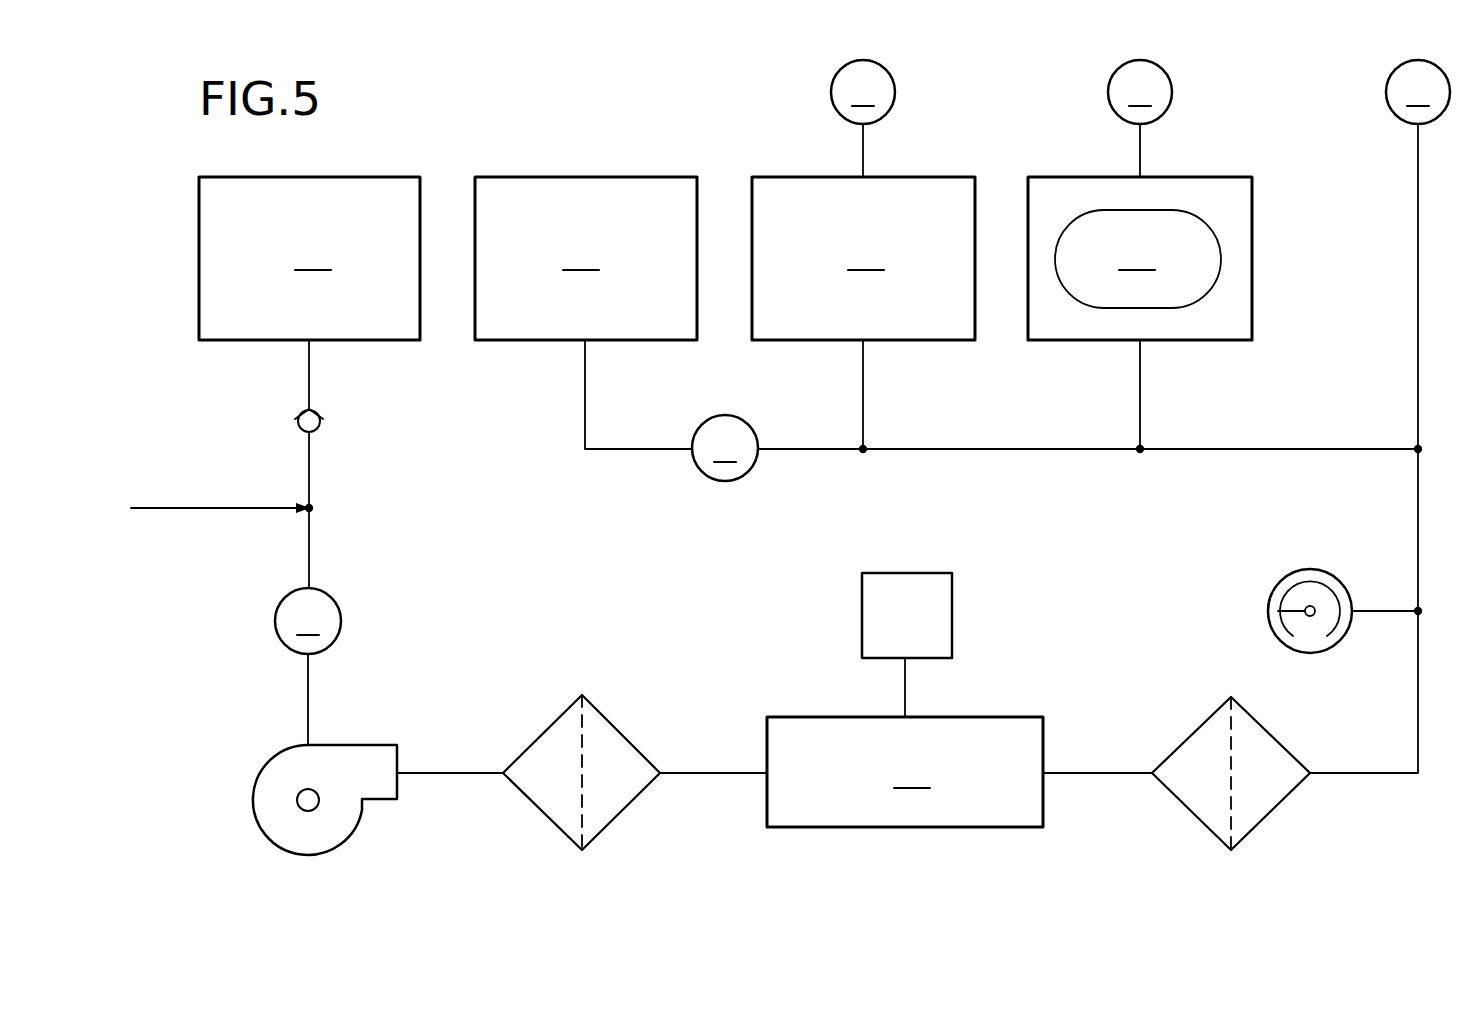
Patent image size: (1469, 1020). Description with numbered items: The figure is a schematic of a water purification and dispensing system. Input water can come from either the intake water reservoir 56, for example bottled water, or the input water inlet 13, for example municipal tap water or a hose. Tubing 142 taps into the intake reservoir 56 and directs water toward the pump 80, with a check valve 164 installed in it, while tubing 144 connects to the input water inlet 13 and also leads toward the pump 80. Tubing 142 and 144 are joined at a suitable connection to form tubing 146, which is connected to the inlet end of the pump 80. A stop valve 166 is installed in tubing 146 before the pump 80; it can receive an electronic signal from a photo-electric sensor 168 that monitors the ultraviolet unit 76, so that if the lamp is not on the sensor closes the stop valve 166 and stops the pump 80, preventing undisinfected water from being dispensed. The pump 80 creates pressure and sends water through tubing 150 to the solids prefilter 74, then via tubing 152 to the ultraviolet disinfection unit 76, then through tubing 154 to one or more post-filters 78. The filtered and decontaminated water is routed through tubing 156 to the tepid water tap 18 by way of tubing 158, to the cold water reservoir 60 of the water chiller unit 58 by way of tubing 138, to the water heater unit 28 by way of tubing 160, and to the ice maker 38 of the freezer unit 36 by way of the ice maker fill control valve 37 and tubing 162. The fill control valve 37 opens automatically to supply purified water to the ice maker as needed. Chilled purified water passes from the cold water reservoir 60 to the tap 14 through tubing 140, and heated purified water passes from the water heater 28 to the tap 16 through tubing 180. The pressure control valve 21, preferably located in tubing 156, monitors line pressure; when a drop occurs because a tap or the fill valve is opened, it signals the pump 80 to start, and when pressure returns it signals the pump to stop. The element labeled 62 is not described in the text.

The input water inlet 13 is at (131, 508).
The tap 14 is at (1107, 92).
The tap 16 is at (830, 92).
The tepid water tap 18 is at (1385, 92).
The pressure control valve 21 is at (1285, 575).
The water heater unit 28 is at (863, 258).
The freezer unit 36 is at (537, 162).
The ice maker fill control valve 37 is at (700, 478).
The ice maker 38 is at (586, 258).
The intake water reservoir 56 is at (309, 258).
The water chiller unit 58 is at (1262, 258).
The cold water reservoir 60 is at (1138, 259).
The enclosure 62 is at (1220, 208).
The solids prefilter 74 is at (560, 740).
The ultraviolet disinfection unit 76 is at (905, 772).
The post-filter 78 is at (1221, 733).
The pump 80 is at (277, 805).
The tubing 138 is at (1140, 386).
The tubing 140 is at (1140, 150).
The tubing 142 is at (311, 468).
The tubing 144 is at (252, 510).
The tubing 146 is at (311, 550).
The tubing 150 is at (447, 772).
The tubing 152 is at (712, 772).
The tubing 154 is at (1098, 772).
The tubing 156 is at (1418, 708).
The tubing 158 is at (1418, 360).
The tubing 160 is at (863, 385).
The tubing 162 is at (600, 452).
The check valve 164 is at (322, 420).
The stop valve 166 is at (275, 624).
The photo-electric sensor 168 is at (883, 595).
The tubing 180 is at (863, 150).